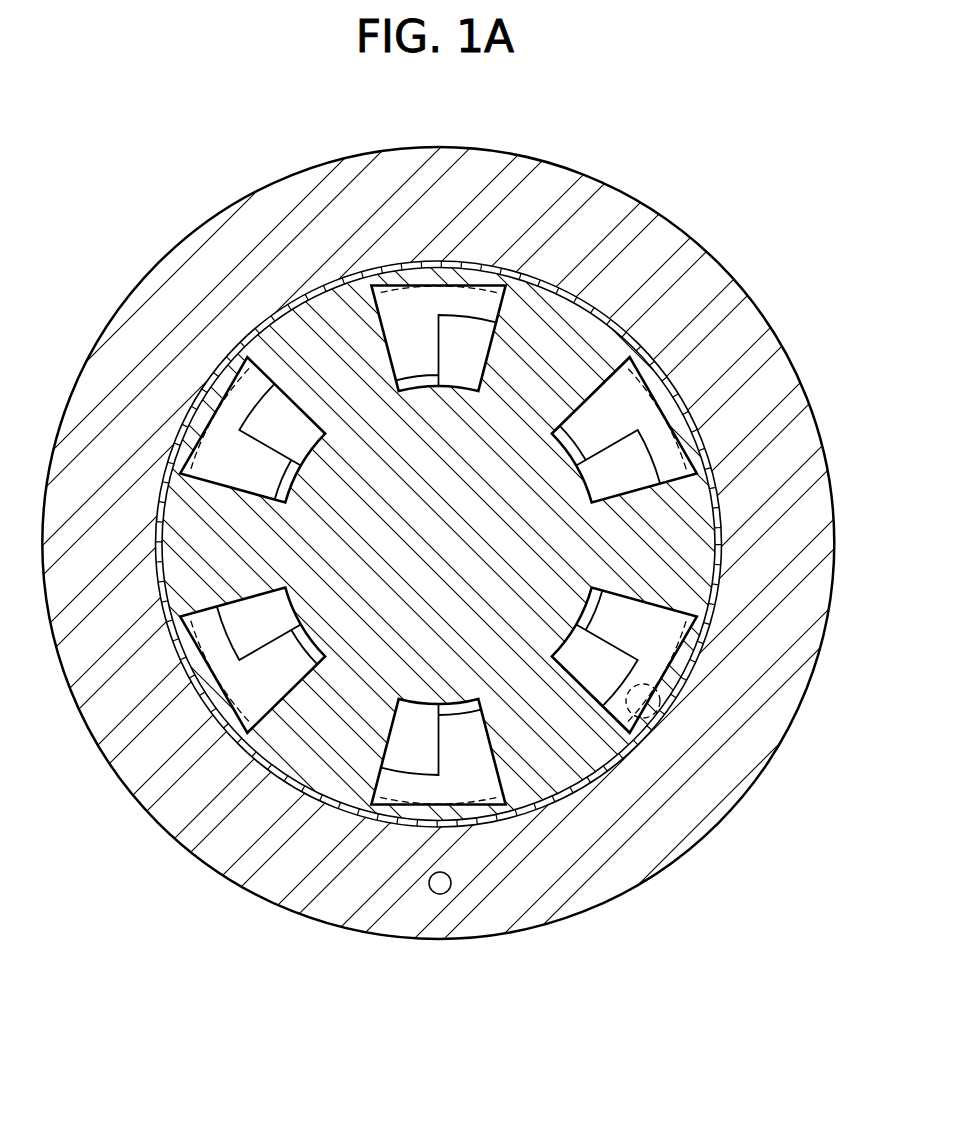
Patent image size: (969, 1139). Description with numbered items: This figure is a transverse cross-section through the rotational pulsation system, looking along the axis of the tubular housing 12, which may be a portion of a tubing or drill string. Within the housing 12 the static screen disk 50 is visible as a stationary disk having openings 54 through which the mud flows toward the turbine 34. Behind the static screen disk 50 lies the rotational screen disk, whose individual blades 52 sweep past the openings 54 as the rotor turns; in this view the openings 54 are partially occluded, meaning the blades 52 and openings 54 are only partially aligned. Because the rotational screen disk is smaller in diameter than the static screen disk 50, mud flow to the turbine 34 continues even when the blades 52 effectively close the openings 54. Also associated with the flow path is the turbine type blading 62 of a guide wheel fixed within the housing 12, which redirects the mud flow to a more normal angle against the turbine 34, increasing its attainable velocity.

The housing 12 is at (552, 208).
The static screen disk 50 is at (265, 328).
The blades 52 is at (625, 460).
The openings 54 is at (195, 473).
The turbine type blading 62 is at (650, 617).
The turbine 34 is at (677, 692).